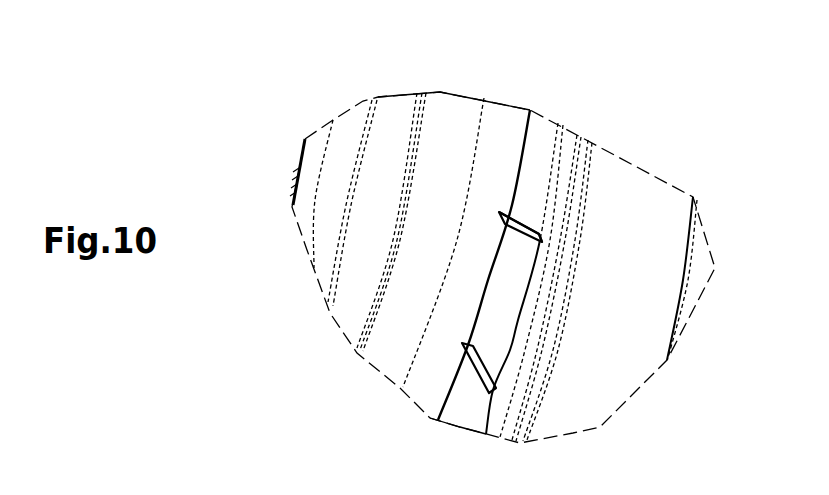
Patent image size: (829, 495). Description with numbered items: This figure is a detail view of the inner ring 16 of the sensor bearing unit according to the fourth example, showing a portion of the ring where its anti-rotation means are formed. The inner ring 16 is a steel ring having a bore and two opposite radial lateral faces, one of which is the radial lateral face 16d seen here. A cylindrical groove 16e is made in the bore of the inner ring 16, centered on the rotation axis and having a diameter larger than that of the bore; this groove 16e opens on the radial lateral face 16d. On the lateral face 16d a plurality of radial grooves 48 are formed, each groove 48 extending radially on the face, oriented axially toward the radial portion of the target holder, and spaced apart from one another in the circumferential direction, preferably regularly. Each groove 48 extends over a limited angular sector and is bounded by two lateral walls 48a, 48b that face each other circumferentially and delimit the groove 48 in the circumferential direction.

The first ring 16 is at (392, 340).
The cylindrical groove 16e is at (447, 118).
The radial lateral face 16d is at (452, 405).
The radial groove 48 is at (546, 241).
The lateral wall 48a is at (540, 232).
The lateral wall 48b is at (533, 241).